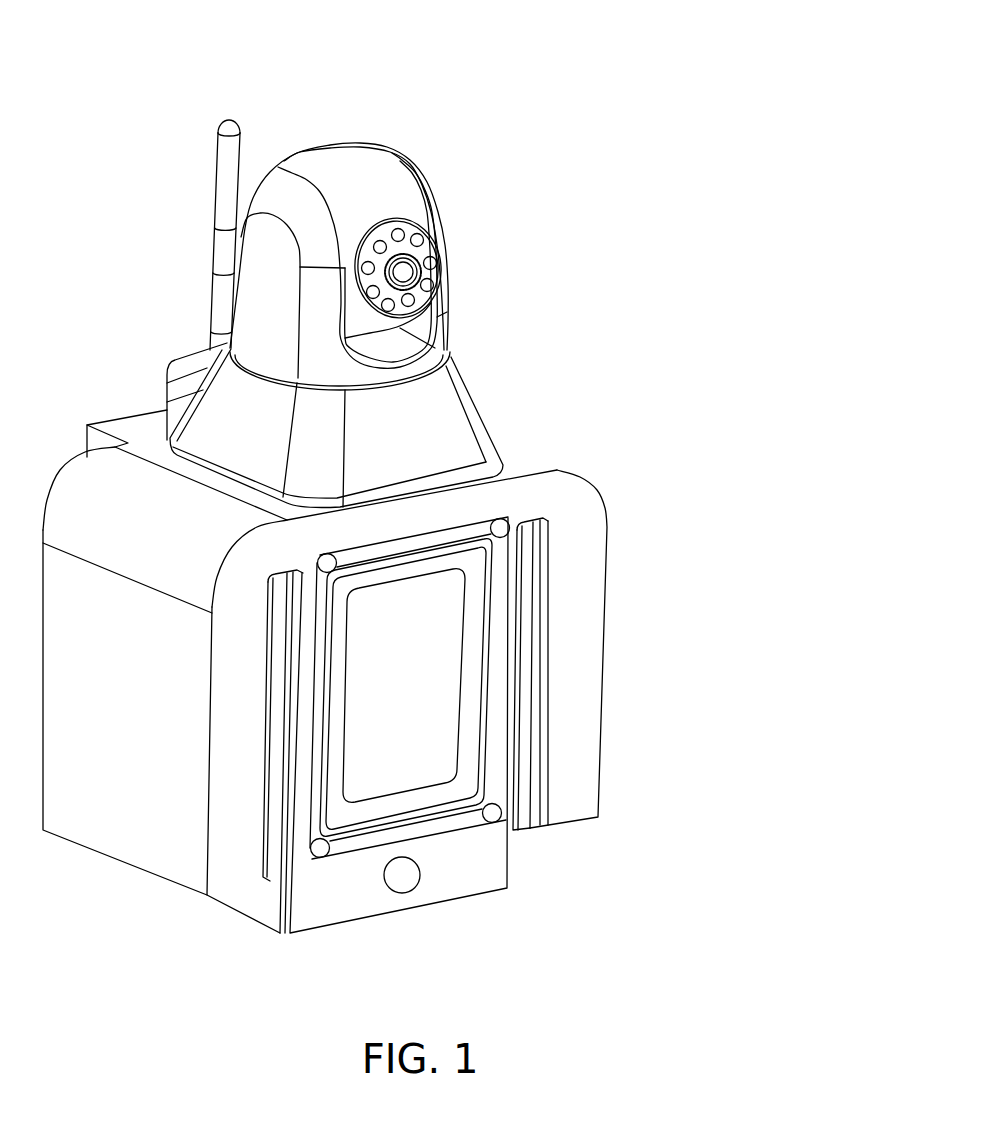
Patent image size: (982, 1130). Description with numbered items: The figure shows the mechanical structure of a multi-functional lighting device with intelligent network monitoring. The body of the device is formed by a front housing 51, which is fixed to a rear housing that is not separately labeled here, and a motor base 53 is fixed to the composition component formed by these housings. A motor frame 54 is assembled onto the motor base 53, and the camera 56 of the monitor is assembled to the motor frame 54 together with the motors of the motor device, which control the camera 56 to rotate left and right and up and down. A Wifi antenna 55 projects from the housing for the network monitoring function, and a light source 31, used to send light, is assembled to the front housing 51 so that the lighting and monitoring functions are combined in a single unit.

The light source 31 is at (413, 663).
The front housing 51 is at (490, 848).
The motor base 53 is at (427, 442).
The motor frame 54 is at (298, 207).
The Wifi antenna 55 is at (225, 197).
The camera 56 is at (413, 242).